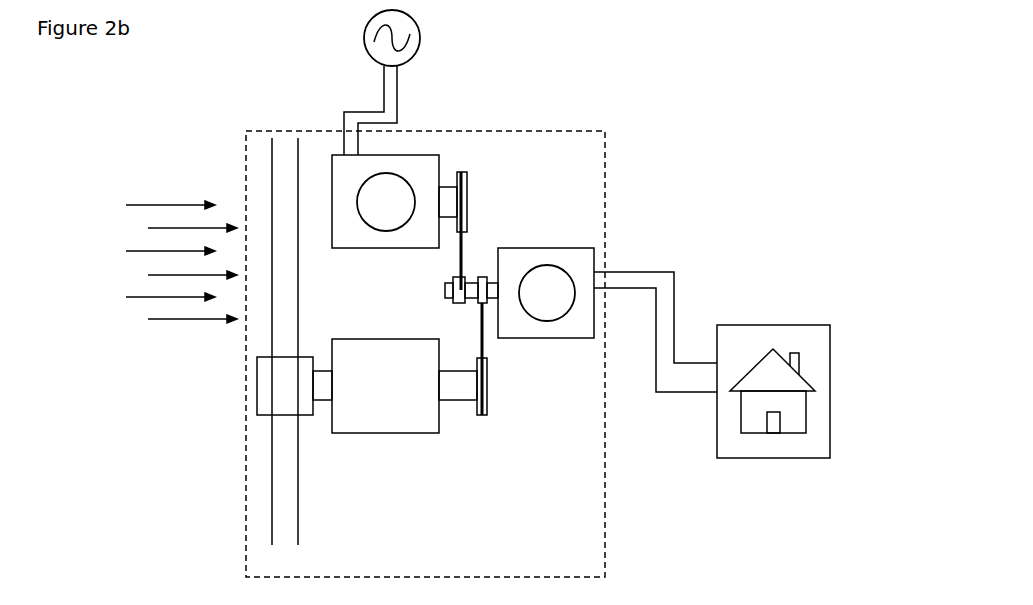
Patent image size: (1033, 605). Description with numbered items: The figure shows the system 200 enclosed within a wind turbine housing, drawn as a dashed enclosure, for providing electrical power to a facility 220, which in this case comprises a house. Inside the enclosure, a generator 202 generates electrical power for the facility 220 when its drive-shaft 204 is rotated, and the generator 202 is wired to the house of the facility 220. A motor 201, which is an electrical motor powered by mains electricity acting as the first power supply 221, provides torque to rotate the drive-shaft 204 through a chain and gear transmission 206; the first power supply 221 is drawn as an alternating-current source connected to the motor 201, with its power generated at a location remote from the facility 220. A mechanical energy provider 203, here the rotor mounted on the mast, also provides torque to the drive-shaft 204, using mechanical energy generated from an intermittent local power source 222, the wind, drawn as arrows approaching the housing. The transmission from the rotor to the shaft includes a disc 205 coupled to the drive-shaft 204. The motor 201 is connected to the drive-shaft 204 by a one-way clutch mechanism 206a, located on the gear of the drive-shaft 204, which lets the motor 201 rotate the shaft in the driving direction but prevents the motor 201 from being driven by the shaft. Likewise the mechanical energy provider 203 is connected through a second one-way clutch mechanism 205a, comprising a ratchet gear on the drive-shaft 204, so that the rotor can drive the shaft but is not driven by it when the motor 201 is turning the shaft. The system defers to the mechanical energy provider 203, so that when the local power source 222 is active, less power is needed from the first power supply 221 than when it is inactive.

The wind energy system housing 200 is at (606, 544).
The motor 201 is at (343, 177).
The generator 202 is at (588, 265).
The mechanical energy provider 203 is at (296, 386).
The drive-shaft 204 is at (472, 283).
The flywheel disc 205 is at (483, 350).
The one-way clutch mechanism 205a is at (485, 278).
The chain and gear transmission 206 is at (458, 195).
The one-way clutch mechanism 206a is at (466, 280).
The facility 220 is at (748, 340).
The first power supply 221 is at (378, 45).
The intermittent local power source 222 is at (152, 297).